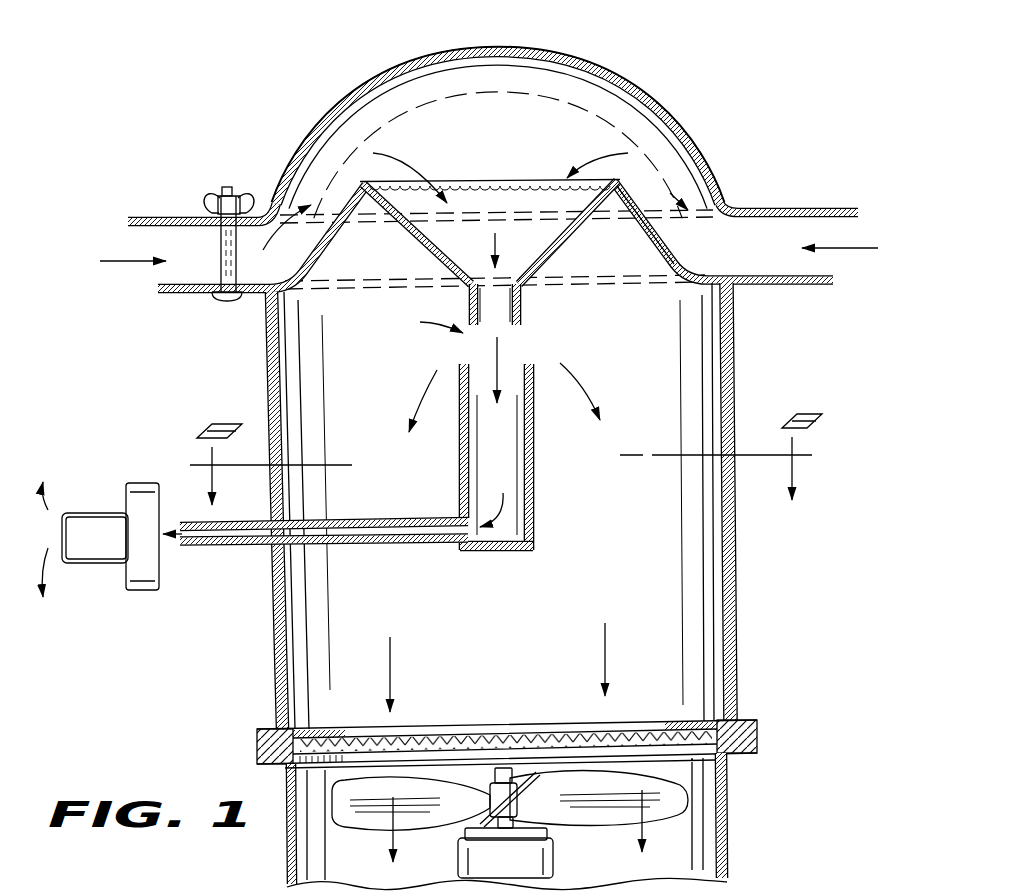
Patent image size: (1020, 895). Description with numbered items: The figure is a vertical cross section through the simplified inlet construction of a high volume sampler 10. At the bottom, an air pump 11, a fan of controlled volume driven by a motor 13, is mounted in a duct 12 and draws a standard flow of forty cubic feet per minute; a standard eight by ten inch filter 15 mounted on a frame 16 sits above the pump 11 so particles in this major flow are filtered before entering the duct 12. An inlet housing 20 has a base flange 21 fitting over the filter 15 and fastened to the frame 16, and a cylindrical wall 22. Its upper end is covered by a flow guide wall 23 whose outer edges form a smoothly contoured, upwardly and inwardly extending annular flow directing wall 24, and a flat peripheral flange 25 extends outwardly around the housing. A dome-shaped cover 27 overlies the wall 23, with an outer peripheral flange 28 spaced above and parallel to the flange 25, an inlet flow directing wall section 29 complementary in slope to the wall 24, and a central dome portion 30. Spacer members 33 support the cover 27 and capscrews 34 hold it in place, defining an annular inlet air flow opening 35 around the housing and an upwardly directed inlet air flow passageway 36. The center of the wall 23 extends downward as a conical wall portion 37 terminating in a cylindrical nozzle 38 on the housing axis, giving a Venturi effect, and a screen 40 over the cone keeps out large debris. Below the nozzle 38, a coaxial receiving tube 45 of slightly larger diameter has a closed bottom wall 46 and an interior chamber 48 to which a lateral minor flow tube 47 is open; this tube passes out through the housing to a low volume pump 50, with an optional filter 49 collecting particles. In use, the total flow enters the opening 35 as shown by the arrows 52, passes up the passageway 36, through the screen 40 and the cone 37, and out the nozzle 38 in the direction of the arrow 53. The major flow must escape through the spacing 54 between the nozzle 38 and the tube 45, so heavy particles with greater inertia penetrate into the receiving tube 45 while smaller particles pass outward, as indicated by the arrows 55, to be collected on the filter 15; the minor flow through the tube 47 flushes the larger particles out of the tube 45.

The high volume sampler 10 is at (763, 800).
The air pump 11 is at (663, 827).
The duct 12 is at (730, 861).
The motor 13 is at (532, 868).
The filter 15 is at (658, 758).
The frame 16 is at (757, 747).
The inlet housing 20 is at (748, 578).
The base flange 21 is at (258, 731).
The cylindrical wall 22 is at (731, 378).
The flow guide wall 23 is at (657, 238).
The annular flow directing wall 24 is at (631, 190).
The peripheral flange 25 is at (773, 283).
The dome-shaped cover 27 is at (603, 70).
The outer peripheral flange 28 is at (788, 204).
The inlet flow directing wall section 29 is at (668, 120).
The central dome portion 30 is at (360, 89).
The spacer members 33 is at (217, 252).
The capscrews 34 is at (237, 303).
The annular inlet air flow opening 35 is at (841, 229).
The inlet air flow passageway 36 is at (327, 187).
The conical wall portion 37 is at (430, 267).
The cylindrical nozzle 38 is at (520, 307).
The screen 40 is at (515, 180).
The receiving tube 45 is at (533, 531).
The closed bottom wall 46 is at (510, 548).
The minor flow tube 47 is at (412, 542).
The interior chamber 48 is at (518, 484).
The filter 49 is at (145, 483).
The low volume pump 50 is at (97, 563).
The arrows 52 is at (117, 262).
The arrow 53 is at (492, 343).
The spacing 54 is at (427, 316).
The arrows 55 is at (593, 403).